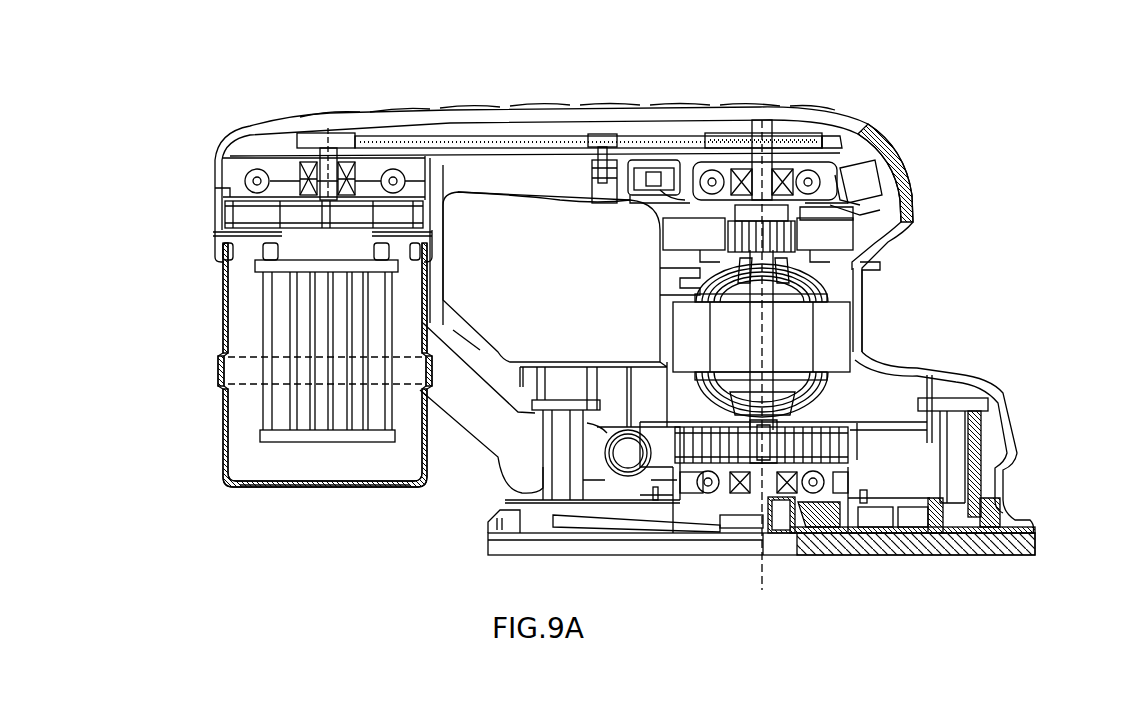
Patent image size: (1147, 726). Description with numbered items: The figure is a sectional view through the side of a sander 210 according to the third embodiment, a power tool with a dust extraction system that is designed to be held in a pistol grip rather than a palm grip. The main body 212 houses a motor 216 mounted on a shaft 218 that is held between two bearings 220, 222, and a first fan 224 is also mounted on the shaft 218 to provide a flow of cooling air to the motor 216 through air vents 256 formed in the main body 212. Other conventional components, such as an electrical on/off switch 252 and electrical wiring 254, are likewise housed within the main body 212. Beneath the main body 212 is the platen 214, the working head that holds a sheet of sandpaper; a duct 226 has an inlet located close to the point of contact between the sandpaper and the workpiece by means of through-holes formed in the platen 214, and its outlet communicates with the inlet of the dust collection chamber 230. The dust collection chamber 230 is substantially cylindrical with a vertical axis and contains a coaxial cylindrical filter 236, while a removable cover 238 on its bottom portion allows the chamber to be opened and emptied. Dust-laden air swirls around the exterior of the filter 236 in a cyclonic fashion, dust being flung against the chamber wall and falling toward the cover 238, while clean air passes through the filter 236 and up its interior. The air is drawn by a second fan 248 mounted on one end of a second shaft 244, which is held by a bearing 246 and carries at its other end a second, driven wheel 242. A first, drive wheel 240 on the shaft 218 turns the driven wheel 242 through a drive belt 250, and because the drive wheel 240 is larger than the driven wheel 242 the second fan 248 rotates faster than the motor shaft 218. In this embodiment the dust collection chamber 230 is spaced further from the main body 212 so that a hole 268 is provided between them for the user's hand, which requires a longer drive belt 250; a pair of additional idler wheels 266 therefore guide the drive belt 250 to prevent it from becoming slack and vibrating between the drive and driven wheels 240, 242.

The sander 210 is at (985, 139).
The main body 212 is at (917, 363).
The platen 214 is at (978, 547).
The motor 216 is at (798, 332).
The shaft 218 is at (798, 145).
The bearing 220 is at (740, 492).
The bearing 222 is at (748, 173).
The first fan 224 is at (815, 447).
The duct 226 is at (487, 420).
The dust collection chamber 230 is at (225, 313).
The filter 236 is at (290, 412).
The removable cover 238 is at (282, 488).
The first, drive wheel 240 is at (807, 140).
The second, driven wheel 242 is at (318, 148).
The second shaft 244 is at (330, 157).
The bearing 246 is at (300, 168).
The second fan 248 is at (253, 217).
The drive belt 250 is at (467, 143).
The electrical on/off switch 252 is at (860, 183).
The electrical wiring 254 is at (698, 167).
The air vents 256 is at (660, 286).
The idler wheels 266 is at (592, 135).
The hole 268 is at (540, 318).